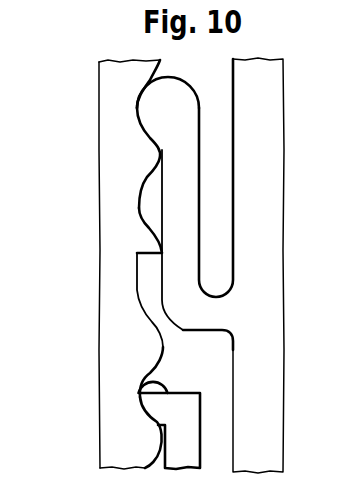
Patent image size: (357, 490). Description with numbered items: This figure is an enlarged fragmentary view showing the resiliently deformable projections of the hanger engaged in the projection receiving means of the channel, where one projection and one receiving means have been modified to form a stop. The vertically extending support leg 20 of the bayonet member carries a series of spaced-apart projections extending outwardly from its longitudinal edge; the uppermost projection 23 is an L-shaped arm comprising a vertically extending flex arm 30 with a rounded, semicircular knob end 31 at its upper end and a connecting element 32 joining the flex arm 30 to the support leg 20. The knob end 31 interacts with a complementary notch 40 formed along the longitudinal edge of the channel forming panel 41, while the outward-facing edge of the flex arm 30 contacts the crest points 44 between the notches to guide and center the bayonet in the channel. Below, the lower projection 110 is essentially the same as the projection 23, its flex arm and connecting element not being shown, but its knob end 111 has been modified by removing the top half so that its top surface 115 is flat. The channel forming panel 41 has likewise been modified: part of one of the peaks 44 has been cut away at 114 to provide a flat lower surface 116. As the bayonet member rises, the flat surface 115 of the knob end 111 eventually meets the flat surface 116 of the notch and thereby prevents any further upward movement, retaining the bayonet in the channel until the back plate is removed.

The support leg 20 is at (262, 148).
The projection 23 is at (200, 180).
The flex arm 30 is at (177, 215).
The knob end 31 is at (152, 107).
The connecting element 32 is at (213, 313).
The notch 40 is at (140, 200).
The channel forming panel 41 is at (109, 79).
The crest point 44 is at (157, 156).
The lower projection 110 is at (203, 428).
The knob end 111 is at (155, 405).
The cut-away portion of peak 114 is at (150, 245).
The top surface 115 is at (143, 381).
The flat lower surface 116 is at (137, 268).